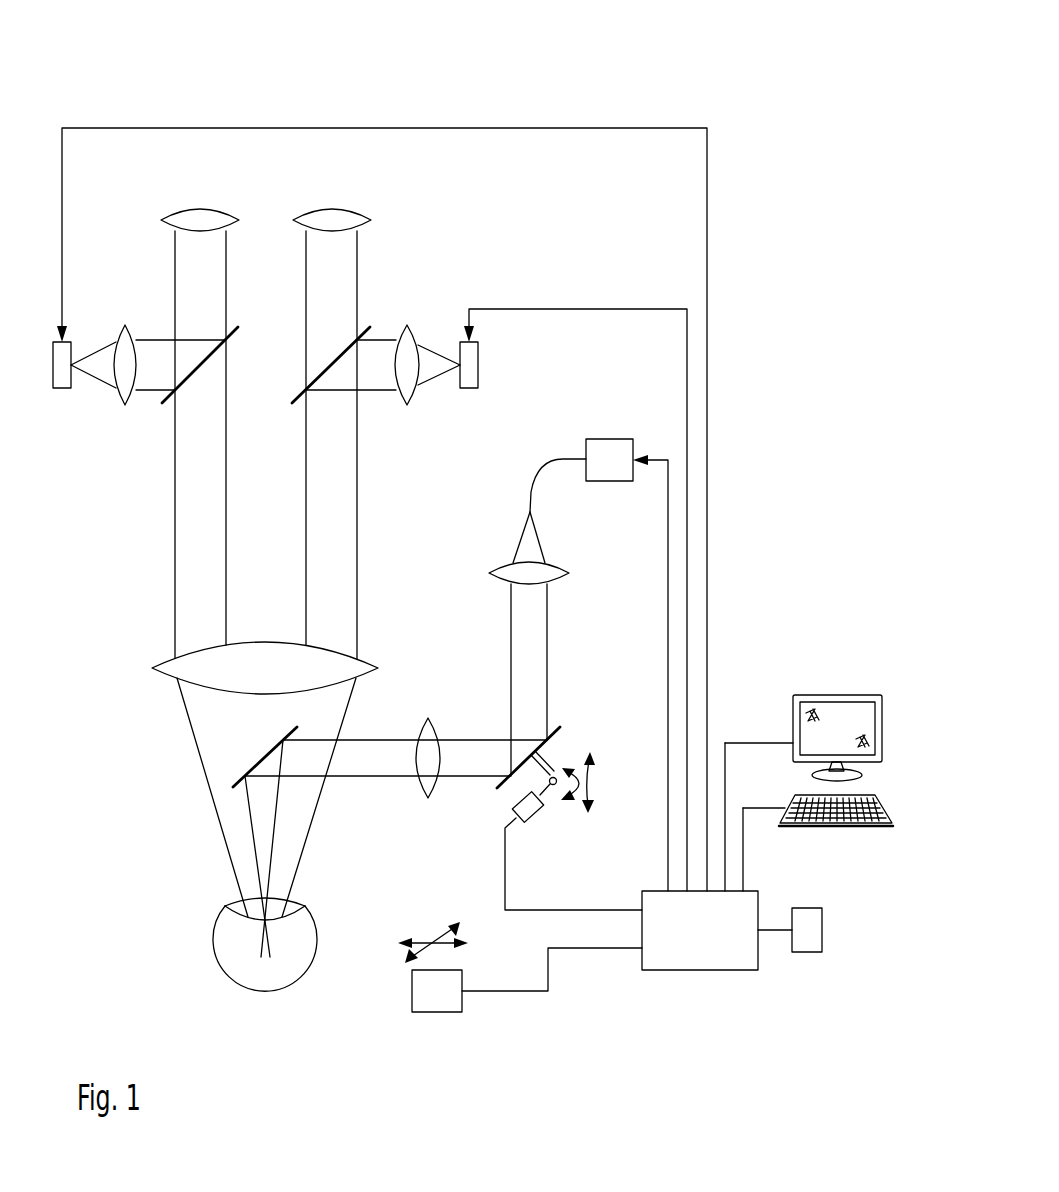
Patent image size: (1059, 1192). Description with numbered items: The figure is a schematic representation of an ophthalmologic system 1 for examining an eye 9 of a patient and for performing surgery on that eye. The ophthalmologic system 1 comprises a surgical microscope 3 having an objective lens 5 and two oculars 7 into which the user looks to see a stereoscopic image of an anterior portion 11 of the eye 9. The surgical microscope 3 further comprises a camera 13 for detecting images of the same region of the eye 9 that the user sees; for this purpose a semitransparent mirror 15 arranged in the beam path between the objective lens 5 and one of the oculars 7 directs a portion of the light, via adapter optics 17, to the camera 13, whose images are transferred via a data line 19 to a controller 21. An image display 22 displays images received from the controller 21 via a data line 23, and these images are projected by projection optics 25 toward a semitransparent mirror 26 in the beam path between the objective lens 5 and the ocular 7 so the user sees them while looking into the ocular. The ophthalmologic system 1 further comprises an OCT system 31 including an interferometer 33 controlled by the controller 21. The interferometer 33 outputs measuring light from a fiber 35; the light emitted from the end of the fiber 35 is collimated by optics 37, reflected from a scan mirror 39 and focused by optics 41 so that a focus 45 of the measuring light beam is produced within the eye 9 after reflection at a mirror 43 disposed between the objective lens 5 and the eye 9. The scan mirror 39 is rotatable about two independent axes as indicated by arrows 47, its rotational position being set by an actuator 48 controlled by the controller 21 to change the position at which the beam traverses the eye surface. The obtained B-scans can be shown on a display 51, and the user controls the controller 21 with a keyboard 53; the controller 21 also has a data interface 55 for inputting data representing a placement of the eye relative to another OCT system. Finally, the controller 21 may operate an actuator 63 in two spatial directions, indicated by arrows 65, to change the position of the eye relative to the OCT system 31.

The ophthalmologic system 1 is at (771, 78).
The surgical microscope 3 is at (120, 612).
The objective lens 5 is at (163, 677).
The oculars 7 is at (200, 209).
The eye 9 is at (213, 943).
The anterior portion 11 is at (313, 884).
The camera 13 is at (469, 389).
The semitransparent mirror 15 is at (299, 394).
The adapter optics 17 is at (404, 324).
The data line 19 is at (578, 309).
The controller 21 is at (689, 943).
The image display 22 is at (62, 389).
The data line 23 is at (576, 128).
The projection optics 25 is at (122, 325).
The semitransparent mirror 26 is at (238, 332).
The OCT system 31 is at (580, 620).
The interferometer 33 is at (608, 439).
The fiber 35 is at (558, 456).
The optics 37 is at (500, 565).
The scan mirror 39 is at (563, 731).
The optics 41 is at (424, 718).
The mirror 43 is at (235, 790).
The measuring point 45 is at (268, 944).
The arrows 47 is at (590, 782).
The actuator 48 is at (536, 820).
The display 51 is at (835, 695).
The keyboard 53 is at (853, 826).
The data interface 55 is at (807, 953).
The actuator 63 is at (435, 1013).
The arrows 65 is at (440, 938).